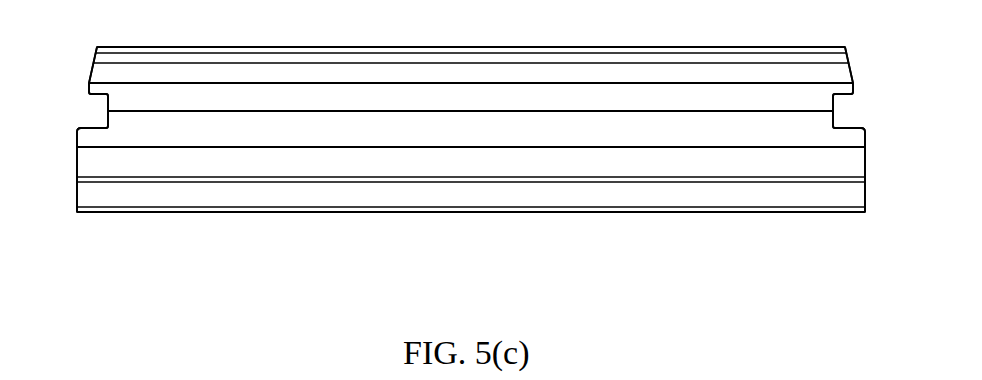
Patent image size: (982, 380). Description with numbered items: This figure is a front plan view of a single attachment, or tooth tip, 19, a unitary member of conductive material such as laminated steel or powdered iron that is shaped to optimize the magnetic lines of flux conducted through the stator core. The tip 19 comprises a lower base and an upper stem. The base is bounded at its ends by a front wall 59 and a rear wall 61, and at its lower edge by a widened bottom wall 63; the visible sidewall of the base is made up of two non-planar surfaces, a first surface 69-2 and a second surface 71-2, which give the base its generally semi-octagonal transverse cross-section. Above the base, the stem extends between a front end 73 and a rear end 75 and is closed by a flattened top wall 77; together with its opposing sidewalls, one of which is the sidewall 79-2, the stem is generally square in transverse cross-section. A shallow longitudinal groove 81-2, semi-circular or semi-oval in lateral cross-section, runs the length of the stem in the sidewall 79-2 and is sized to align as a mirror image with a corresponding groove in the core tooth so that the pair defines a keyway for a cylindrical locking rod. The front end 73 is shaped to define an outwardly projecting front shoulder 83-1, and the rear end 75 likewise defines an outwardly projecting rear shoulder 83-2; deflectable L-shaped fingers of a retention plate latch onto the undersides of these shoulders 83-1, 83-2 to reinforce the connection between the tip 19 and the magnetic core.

The attachment (tooth tip) 19 is at (206, 283).
The front wall 59 is at (75, 192).
The rear wall 61 is at (865, 197).
The widened bottom wall 63 is at (520, 213).
The first surface 69-2 is at (273, 198).
The second surface 71-2 is at (362, 168).
The front end 73 is at (91, 68).
The rear end 75 is at (853, 70).
The flattened top wall 77 is at (438, 47).
The sidewall 79-2 is at (210, 97).
The longitudinal groove 81-2 is at (593, 75).
The front shoulder 83-1 is at (88, 93).
The rear shoulder 83-2 is at (845, 96).